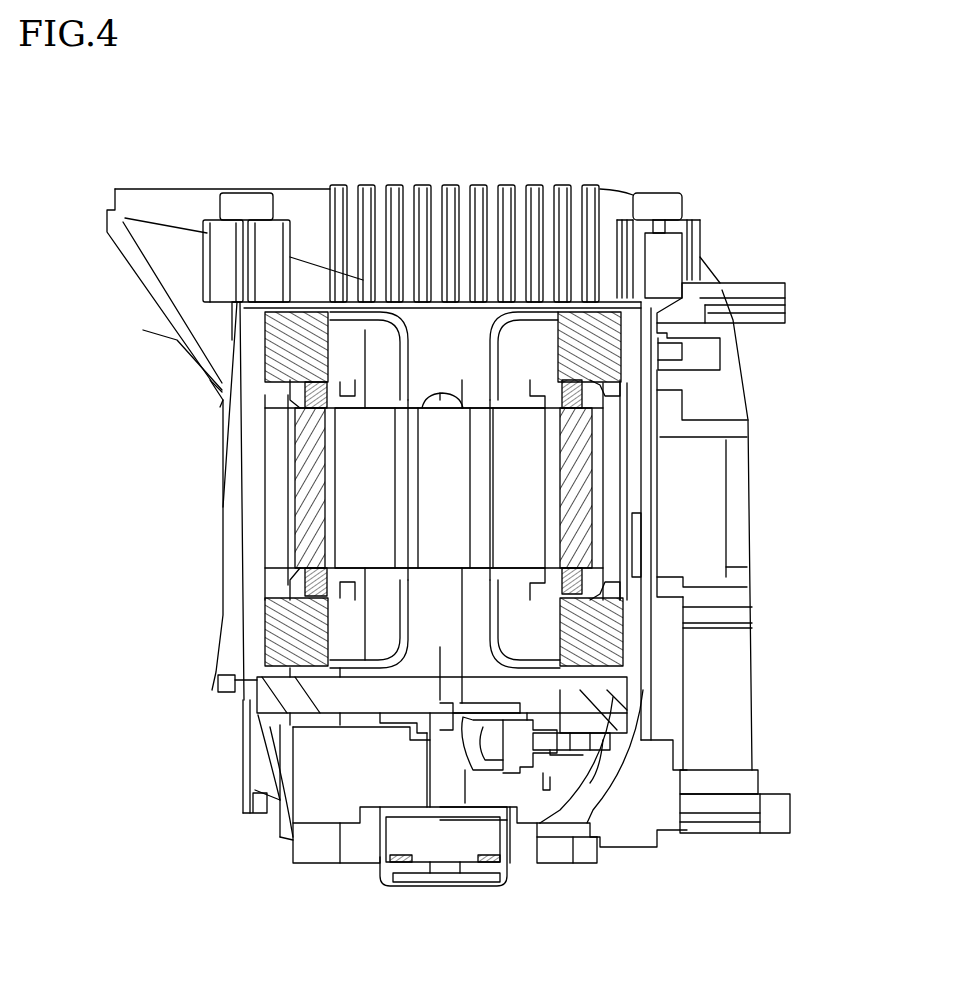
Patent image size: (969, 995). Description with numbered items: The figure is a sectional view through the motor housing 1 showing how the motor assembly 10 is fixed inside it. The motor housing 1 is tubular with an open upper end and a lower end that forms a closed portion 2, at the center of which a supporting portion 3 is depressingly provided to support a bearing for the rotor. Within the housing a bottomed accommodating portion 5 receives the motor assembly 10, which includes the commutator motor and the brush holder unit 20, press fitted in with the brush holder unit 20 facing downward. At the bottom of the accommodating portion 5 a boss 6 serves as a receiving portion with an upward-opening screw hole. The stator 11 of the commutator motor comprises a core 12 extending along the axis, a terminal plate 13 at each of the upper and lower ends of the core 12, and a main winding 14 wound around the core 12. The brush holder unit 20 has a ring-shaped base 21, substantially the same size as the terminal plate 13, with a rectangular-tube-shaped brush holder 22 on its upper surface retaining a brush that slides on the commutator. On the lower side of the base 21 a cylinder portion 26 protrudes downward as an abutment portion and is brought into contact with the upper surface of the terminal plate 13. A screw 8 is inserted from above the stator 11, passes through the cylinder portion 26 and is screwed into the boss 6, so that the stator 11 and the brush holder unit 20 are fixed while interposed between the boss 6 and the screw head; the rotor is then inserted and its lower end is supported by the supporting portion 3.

The motor housing 1 is at (220, 530).
The closed portion 2 is at (353, 850).
The supporting portion 3 is at (460, 843).
The accommodating portion 5 is at (620, 440).
The boss 6 is at (450, 790).
The screw 8 is at (432, 395).
The motor assembly 10 is at (443, 327).
The stator 11 is at (623, 347).
The core 12 is at (293, 490).
The terminal plate 13 is at (287, 397).
The main winding 14 is at (282, 362).
The brush holder unit 20 is at (252, 687).
The base 21 is at (263, 697).
The brush holder 22 is at (517, 760).
The cylinder portion 26 is at (440, 647).